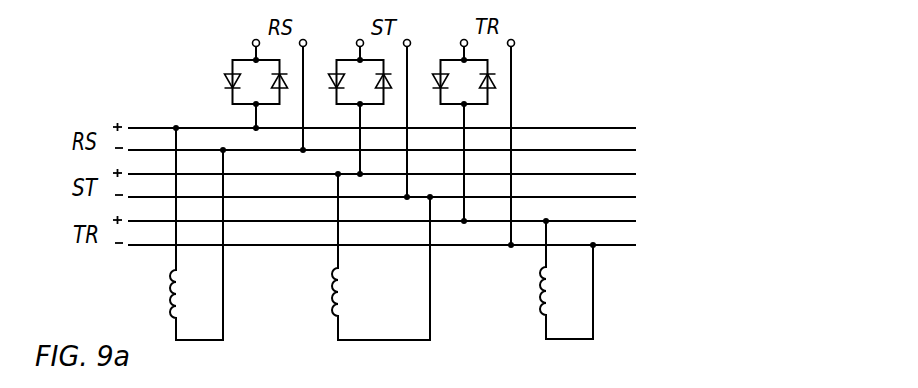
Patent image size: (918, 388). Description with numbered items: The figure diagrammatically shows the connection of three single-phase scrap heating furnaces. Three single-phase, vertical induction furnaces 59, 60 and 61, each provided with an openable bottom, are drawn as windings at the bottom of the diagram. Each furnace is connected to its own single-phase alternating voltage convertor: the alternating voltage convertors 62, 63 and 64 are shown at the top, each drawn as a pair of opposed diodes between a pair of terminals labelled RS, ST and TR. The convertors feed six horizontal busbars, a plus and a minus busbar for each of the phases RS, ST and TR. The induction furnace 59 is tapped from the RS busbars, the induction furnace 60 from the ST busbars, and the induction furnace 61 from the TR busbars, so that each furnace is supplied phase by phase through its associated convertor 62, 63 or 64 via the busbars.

The single-phase vertical induction furnace 59 is at (168, 298).
The single-phase vertical induction furnace 60 is at (327, 297).
The single-phase vertical induction furnace 61 is at (537, 292).
The alternating voltage convertor 62 is at (222, 83).
The alternating voltage convertor 63 is at (329, 82).
The alternating voltage convertor 64 is at (432, 82).